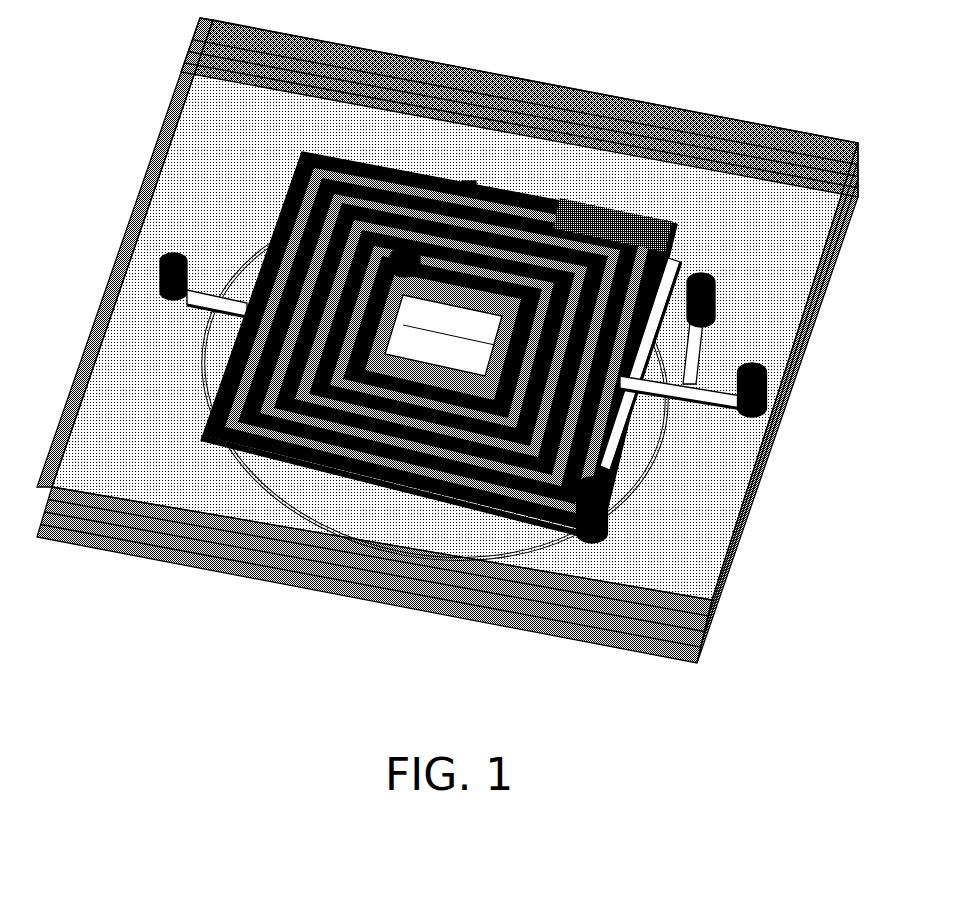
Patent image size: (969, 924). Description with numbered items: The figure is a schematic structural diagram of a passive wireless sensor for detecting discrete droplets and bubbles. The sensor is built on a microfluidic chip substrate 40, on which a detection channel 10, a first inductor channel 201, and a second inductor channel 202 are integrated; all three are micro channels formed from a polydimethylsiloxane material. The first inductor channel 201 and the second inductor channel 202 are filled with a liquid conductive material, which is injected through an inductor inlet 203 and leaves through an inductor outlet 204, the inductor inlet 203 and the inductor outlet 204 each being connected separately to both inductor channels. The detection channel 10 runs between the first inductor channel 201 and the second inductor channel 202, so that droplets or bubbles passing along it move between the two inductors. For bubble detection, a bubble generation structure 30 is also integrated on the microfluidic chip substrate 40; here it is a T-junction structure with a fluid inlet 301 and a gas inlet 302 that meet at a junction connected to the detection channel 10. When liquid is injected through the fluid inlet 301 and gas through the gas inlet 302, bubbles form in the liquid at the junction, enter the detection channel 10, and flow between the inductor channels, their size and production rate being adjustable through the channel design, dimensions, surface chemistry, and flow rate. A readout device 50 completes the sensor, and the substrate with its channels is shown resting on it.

The detection channel 10 is at (557, 203).
The first inductor channel 201 is at (625, 237).
The second inductor channel 202 is at (690, 230).
The inductor inlet 203 is at (470, 183).
The inductor outlet 204 is at (608, 495).
The bubble generation structure 30 is at (712, 383).
The fluid inlet 301 is at (765, 362).
The gas inlet 302 is at (706, 272).
The microfluidic chip substrate 40 is at (425, 135).
The readout device 50 is at (722, 582).